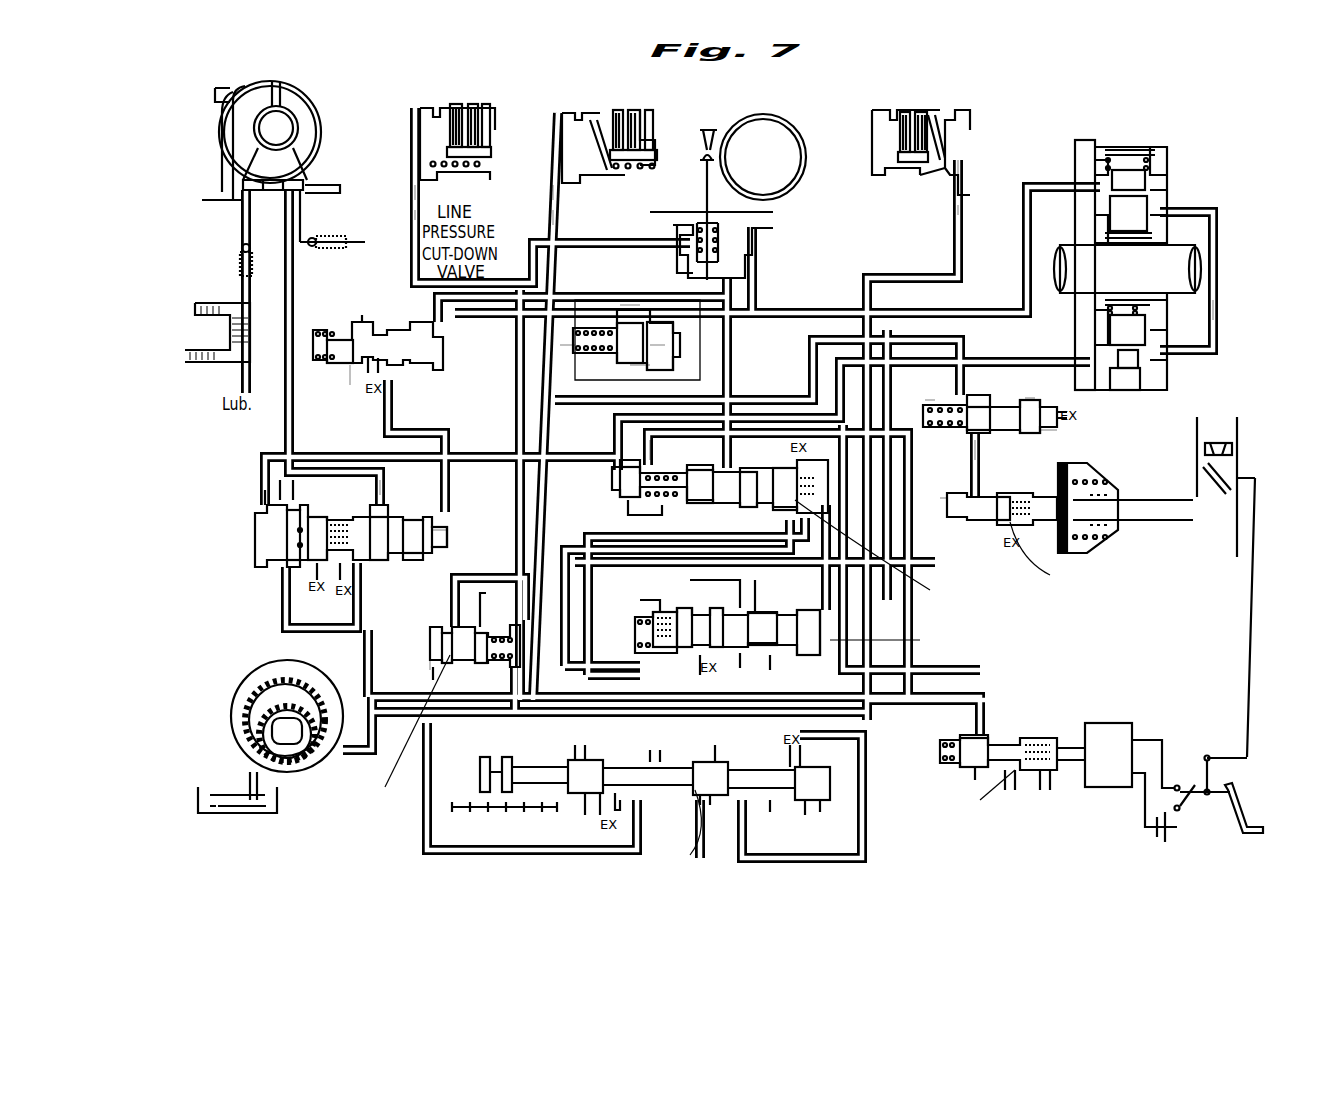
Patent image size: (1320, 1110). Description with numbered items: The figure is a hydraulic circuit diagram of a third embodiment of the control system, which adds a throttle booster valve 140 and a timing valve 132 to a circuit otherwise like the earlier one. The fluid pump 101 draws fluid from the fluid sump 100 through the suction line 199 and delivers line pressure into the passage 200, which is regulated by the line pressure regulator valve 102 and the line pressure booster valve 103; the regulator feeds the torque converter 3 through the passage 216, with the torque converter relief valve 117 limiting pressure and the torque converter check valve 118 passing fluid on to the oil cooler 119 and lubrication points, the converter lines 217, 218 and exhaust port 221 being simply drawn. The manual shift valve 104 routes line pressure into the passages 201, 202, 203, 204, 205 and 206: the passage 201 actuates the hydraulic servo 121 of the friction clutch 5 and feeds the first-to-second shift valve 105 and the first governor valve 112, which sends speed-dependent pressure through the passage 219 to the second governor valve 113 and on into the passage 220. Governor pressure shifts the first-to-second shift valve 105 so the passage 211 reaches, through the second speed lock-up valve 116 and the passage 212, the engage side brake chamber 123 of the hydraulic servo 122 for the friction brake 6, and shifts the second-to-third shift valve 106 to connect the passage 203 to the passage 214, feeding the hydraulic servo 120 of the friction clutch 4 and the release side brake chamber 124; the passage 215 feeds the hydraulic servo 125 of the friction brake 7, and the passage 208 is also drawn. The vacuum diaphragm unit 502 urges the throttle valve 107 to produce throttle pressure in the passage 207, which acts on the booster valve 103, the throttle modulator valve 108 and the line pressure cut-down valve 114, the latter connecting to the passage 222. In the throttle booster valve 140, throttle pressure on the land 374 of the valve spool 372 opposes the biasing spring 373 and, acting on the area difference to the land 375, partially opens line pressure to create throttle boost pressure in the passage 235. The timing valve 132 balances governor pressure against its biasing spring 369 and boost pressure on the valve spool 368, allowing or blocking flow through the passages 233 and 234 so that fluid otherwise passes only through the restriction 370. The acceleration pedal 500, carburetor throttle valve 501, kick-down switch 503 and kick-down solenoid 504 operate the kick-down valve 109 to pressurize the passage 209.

The torque converter 3 is at (400, 60).
The friction clutch 4 is at (450, 108).
The friction clutch 5 is at (628, 112).
The friction brake 6 is at (778, 130).
The friction brake 7 is at (900, 115).
The fluid sump 100 is at (200, 798).
The fluid pump 101 is at (232, 700).
The line pressure regulator valve 102 is at (260, 612).
The line pressure booster valve 103 is at (257, 540).
The manual shift valve 104 is at (830, 778).
The 1-2 shift valve 105 is at (635, 622).
The 2-3 shift valve 106 is at (830, 495).
The throttle valve 107 is at (940, 500).
The throttle modulator valve 108 is at (612, 480).
The kick-down valve 109 is at (945, 768).
The first governor valve 112 is at (1122, 388).
The second governor valve 113 is at (1113, 147).
The line pressure cut-down valve 114 is at (442, 345).
The 2nd speed lock-up valve 116 is at (430, 640).
The torque converter relief valve 117 is at (312, 238).
The torque converter check valve 118 is at (240, 250).
The oil cooler 119 is at (225, 334).
The hydraulic servo 120 is at (413, 195).
The hydraulic servo 121 is at (556, 194).
The hydraulic servo 122 is at (712, 225).
The engage side brake chamber 123 is at (680, 256).
The release side brake chamber 124 is at (757, 230).
The hydraulic servo 125 is at (965, 170).
The timing valve 132 is at (680, 344).
The throttle booster valve 140 is at (1060, 428).
The suction line 199 is at (250, 770).
The line pressure passage 200 is at (970, 437).
The passage 201 is at (553, 213).
The passage 202 is at (430, 666).
The passage 203 is at (690, 518).
The passage 204 is at (745, 825).
The passage 205 is at (740, 655).
The passage 206 is at (770, 515).
The passage 207 is at (410, 378).
The passage 208 is at (628, 512).
The passage 209 is at (652, 445).
The passage 211 is at (480, 612).
The passage 212 is at (652, 212).
The passage 214 is at (412, 212).
The passage 215 is at (963, 208).
The passage 216 is at (388, 487).
The converter passage 217 is at (243, 222).
The lubrication passage 218 is at (242, 385).
The passage 219 is at (1214, 312).
The passage 220 is at (1045, 185).
The exhaust port 221 is at (358, 384).
The passage 222 is at (385, 425).
The passage 233 is at (640, 368).
The passage 234 is at (625, 310).
The passage 235 is at (580, 375).
The valve spool 368 is at (660, 350).
The biasing spring 369 is at (573, 347).
The restriction 370 is at (700, 280).
The valve spool 372 is at (1030, 402).
The biasing spring 373 is at (928, 404).
The land 374 is at (1050, 438).
The land 375 is at (978, 450).
The acceleration pedal 500 is at (1243, 815).
The carburetor throttle valve 501 is at (1226, 478).
The vacuum diaphragm unit 502 is at (1110, 540).
The kick-down switch 503 is at (1188, 795).
The kick-down solenoid 504 is at (1100, 722).